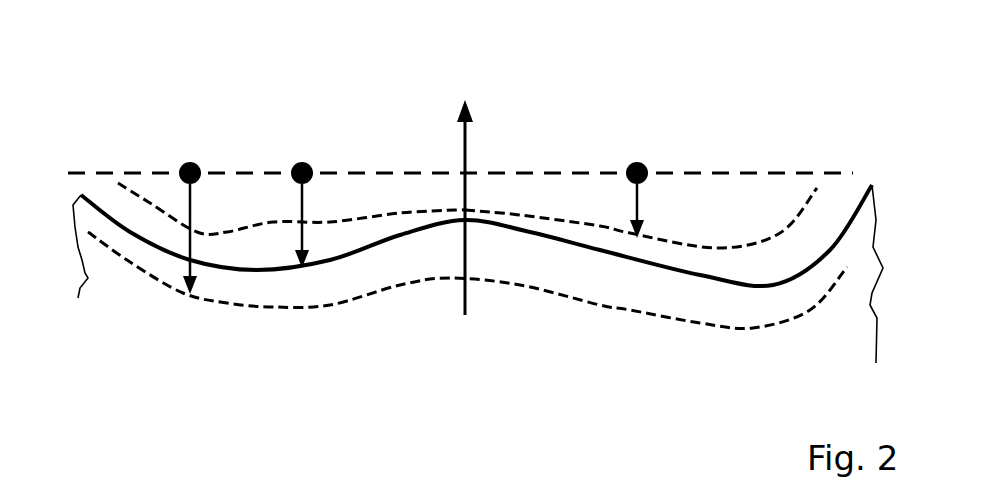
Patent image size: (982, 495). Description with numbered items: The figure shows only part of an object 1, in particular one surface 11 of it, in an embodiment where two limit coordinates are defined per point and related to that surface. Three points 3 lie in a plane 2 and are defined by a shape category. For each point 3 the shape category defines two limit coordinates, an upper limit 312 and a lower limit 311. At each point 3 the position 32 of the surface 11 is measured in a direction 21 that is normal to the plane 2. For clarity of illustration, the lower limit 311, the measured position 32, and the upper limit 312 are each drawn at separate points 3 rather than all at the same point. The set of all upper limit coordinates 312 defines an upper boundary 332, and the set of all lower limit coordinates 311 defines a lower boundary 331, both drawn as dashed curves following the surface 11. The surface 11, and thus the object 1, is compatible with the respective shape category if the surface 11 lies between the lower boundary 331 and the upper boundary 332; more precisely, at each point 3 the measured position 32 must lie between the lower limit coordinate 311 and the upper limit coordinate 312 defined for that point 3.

The object 1 is at (120, 299).
The surface 11 is at (106, 219).
The plane 2 is at (838, 175).
The direction 21 is at (465, 295).
The point 3 is at (190, 166).
The measured position 32 is at (305, 208).
The lower limit coordinate 311 is at (203, 221).
The upper limit coordinate 312 is at (643, 212).
The lower boundary 331 is at (270, 307).
The upper boundary 332 is at (596, 225).